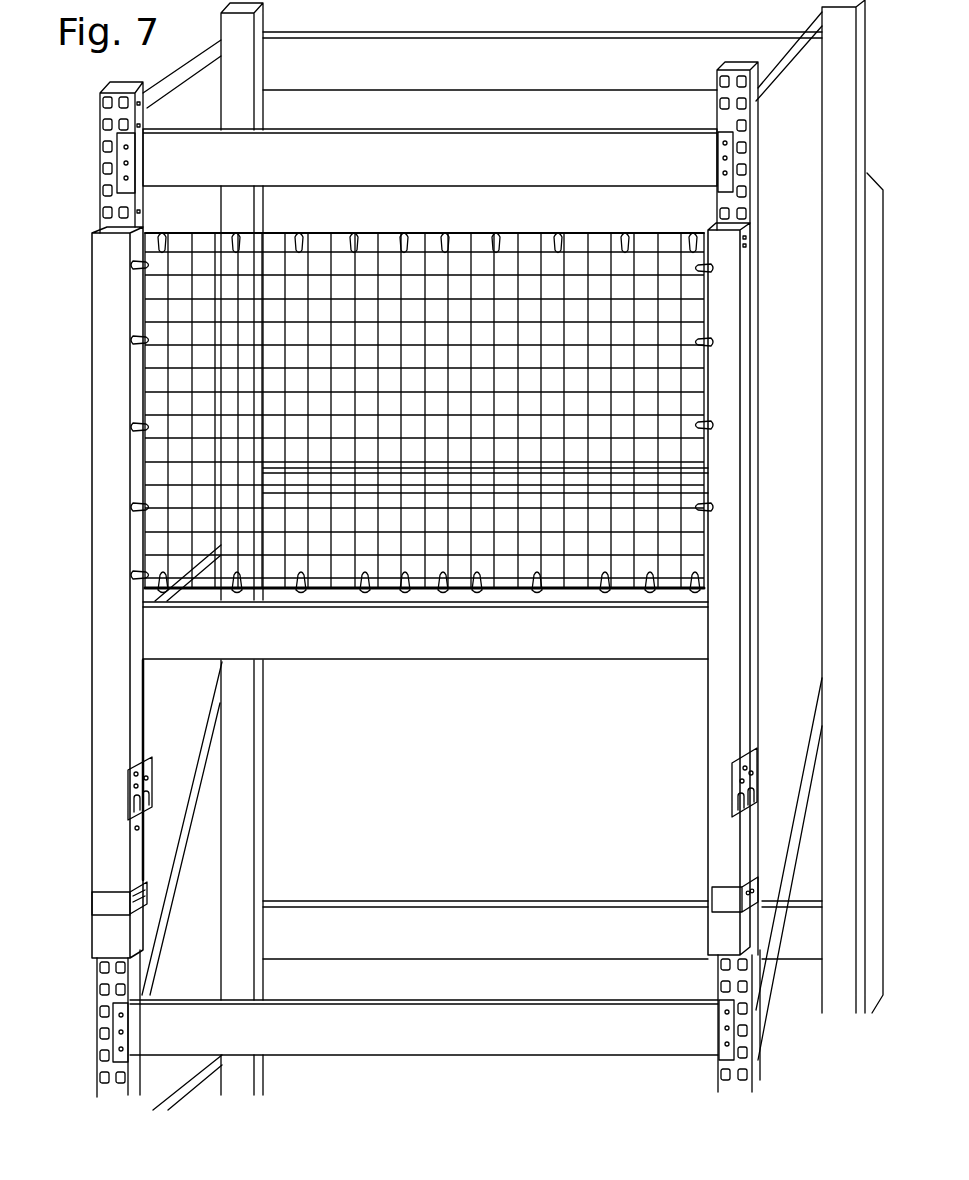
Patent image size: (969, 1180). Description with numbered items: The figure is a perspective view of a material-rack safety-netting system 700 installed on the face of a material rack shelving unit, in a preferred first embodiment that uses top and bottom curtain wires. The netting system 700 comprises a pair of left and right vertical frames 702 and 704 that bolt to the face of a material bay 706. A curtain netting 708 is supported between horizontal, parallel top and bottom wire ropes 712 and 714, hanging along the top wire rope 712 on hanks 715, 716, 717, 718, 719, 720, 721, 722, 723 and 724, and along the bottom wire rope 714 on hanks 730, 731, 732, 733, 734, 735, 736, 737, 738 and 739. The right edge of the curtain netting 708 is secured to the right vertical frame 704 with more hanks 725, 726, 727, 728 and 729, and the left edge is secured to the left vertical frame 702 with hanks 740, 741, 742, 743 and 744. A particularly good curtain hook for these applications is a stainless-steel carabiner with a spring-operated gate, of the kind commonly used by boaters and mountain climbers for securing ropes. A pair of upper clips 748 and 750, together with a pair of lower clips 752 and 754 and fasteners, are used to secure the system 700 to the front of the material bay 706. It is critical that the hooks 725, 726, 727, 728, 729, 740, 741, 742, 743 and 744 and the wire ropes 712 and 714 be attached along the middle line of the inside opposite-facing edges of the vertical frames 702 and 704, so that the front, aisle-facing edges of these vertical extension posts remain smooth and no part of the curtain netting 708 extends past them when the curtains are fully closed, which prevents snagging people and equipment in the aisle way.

The material-rack safety-netting system 700 is at (80, 196).
The left vertical frame 702 is at (102, 378).
The right vertical frame 704 is at (740, 312).
The material bay 706 is at (883, 735).
The curtain netting 708 is at (265, 278).
The top wire rope 712 is at (426, 233).
The bottom wire rope 714 is at (420, 595).
The hank 715 is at (162, 235).
The hank 716 is at (236, 232).
The hank 717 is at (299, 236).
The hank 718 is at (354, 236).
The hank 719 is at (404, 236).
The hank 720 is at (445, 236).
The hank 721 is at (496, 236).
The hank 722 is at (558, 236).
The hank 723 is at (625, 236).
The hank 724 is at (693, 236).
The hank 725 is at (714, 268).
The hank 726 is at (714, 342).
The hank 727 is at (714, 425).
The hank 728 is at (714, 507).
The hank 729 is at (695, 595).
The hank 730 is at (650, 595).
The hank 731 is at (605, 595).
The hank 732 is at (537, 595).
The hank 733 is at (477, 595).
The hank 734 is at (443, 595).
The hank 735 is at (405, 595).
The hank 736 is at (365, 595).
The hank 737 is at (301, 595).
The hank 738 is at (237, 595).
The hank 739 is at (163, 595).
The hank 740 is at (130, 578).
The hank 741 is at (130, 510).
The hank 742 is at (129, 429).
The hank 743 is at (129, 337).
The hank 744 is at (130, 268).
The upper clip 748 is at (152, 770).
The upper clip 750 is at (757, 757).
The lower clip 752 is at (93, 905).
The lower clip 754 is at (714, 888).